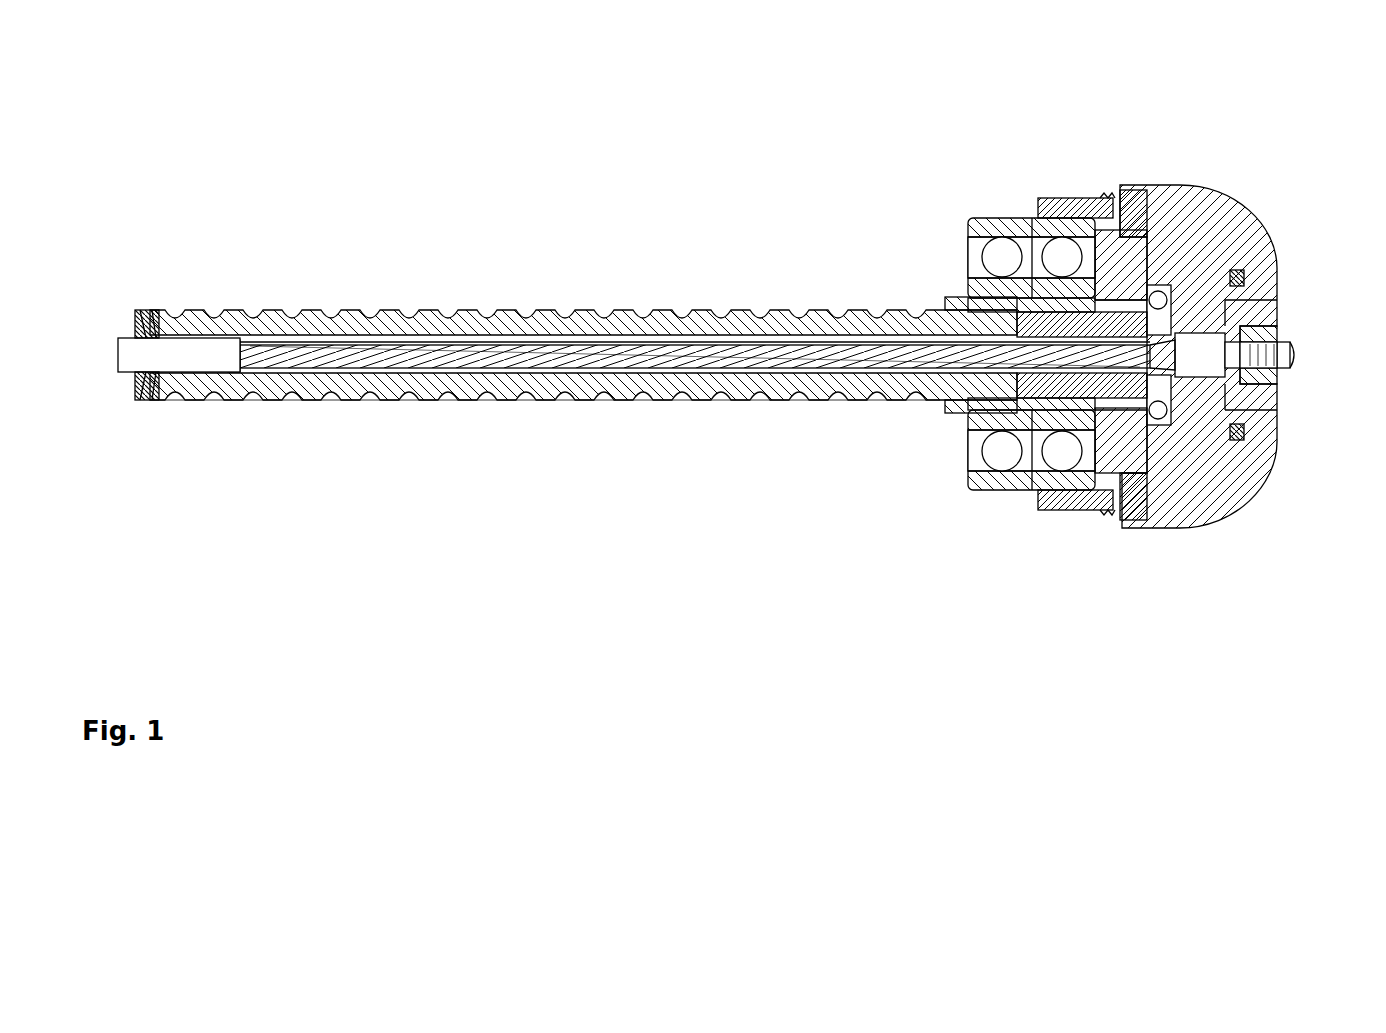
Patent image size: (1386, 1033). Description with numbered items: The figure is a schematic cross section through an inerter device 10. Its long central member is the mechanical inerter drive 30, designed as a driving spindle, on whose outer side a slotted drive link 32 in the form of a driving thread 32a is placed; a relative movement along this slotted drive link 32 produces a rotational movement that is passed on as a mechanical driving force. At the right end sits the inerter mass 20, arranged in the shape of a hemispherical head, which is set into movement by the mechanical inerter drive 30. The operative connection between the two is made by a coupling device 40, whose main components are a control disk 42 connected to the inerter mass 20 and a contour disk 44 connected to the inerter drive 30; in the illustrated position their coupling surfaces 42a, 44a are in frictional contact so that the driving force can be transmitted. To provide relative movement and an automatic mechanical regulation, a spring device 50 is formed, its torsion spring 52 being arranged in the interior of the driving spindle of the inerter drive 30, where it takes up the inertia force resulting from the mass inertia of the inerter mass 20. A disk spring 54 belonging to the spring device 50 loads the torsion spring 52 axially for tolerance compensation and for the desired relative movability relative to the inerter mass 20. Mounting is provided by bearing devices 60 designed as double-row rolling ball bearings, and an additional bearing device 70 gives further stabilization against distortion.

The inerter device 10 is at (757, 182).
The inerter mass 20 is at (1210, 185).
The mechanical inerter drive 30 is at (560, 310).
The slotted drive link 32 is at (600, 402).
The driving thread 32a is at (682, 400).
The coupling device 40 is at (1124, 216).
The control disk 42 is at (1147, 190).
The coupling surface 42a is at (1140, 478).
The contour disk 44 is at (1097, 198).
The coupling surface 44a is at (1112, 470).
The spring device 50 is at (356, 372).
The torsion spring 52 is at (502, 355).
The disk spring 54 is at (148, 405).
The bearing devices 60 is at (1028, 482).
The additional bearing device 70 is at (1180, 298).